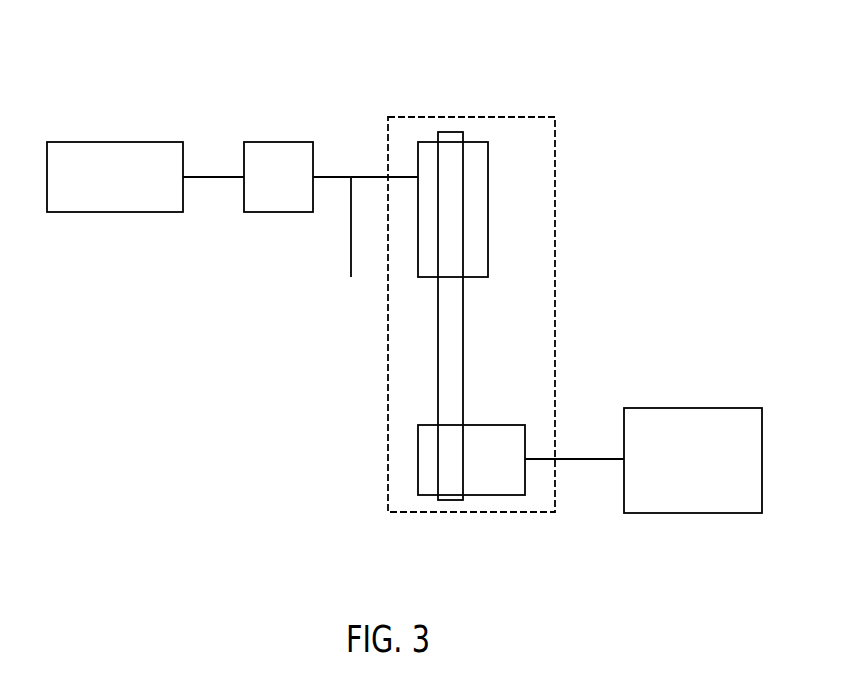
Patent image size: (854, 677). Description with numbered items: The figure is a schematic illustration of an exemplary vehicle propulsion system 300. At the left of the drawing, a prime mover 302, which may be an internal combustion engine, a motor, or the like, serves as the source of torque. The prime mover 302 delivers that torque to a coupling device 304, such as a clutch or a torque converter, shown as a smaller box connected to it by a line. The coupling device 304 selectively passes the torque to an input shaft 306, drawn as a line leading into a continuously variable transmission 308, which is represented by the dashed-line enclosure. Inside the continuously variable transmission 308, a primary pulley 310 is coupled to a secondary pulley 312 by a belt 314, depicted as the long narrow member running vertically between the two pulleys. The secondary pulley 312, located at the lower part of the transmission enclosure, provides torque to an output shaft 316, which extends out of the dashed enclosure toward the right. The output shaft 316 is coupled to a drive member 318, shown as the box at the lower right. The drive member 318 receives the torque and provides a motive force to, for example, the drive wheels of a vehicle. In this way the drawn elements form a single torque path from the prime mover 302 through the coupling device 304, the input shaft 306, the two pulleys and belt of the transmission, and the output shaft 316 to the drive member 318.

The propulsion system 300 is at (587, 70).
The prime mover 302 is at (118, 142).
The coupling device 304 is at (291, 142).
The input shaft 306 is at (352, 241).
The continuously variable transmission 308 is at (555, 147).
The primary pulley 310 is at (489, 198).
The secondary pulley 312 is at (495, 495).
The belt 314 is at (465, 352).
The output shaft 316 is at (570, 457).
The drive member 318 is at (700, 408).